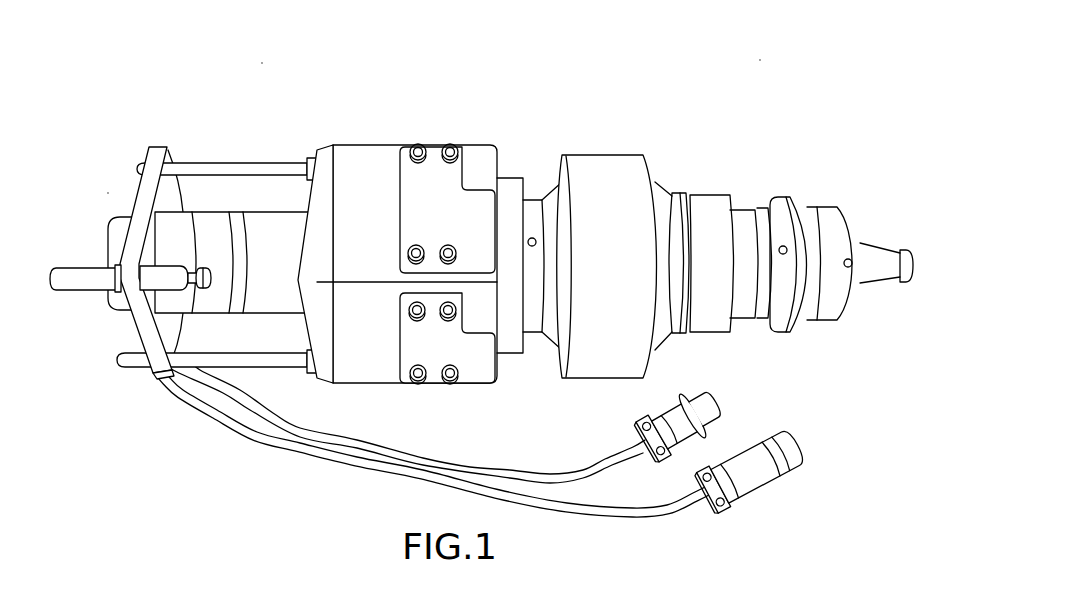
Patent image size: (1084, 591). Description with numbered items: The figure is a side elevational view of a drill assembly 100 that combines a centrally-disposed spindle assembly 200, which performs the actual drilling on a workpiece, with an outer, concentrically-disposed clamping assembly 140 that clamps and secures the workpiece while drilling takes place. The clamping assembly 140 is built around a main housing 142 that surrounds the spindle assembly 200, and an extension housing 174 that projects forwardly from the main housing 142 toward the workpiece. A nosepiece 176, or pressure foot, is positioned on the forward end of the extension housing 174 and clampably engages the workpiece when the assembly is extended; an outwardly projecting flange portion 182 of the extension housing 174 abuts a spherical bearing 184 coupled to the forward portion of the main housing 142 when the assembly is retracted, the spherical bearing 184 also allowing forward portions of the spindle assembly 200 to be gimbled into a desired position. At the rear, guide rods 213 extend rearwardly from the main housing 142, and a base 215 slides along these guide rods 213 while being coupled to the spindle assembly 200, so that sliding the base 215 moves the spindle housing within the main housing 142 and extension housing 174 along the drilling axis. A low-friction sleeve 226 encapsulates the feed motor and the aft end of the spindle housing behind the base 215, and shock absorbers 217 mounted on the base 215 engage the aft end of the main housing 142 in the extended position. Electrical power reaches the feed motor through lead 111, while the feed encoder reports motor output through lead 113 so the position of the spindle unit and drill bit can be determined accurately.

The drill assembly 100 is at (752, 51).
The clamping assembly 140 is at (262, 63).
The spindle assembly 200 is at (108, 193).
The base 215 is at (158, 147).
The sleeve 226 is at (275, 213).
The guide rods 213 is at (283, 158).
The main housing 142 is at (384, 152).
The spherical bearing 184 is at (594, 167).
The flange portion 182 is at (710, 203).
The extension housing 174 is at (745, 227).
The nosepiece 176 is at (912, 252).
The shock absorbers 217 is at (82, 283).
The lead 111 is at (220, 388).
The lead 113 is at (270, 437).